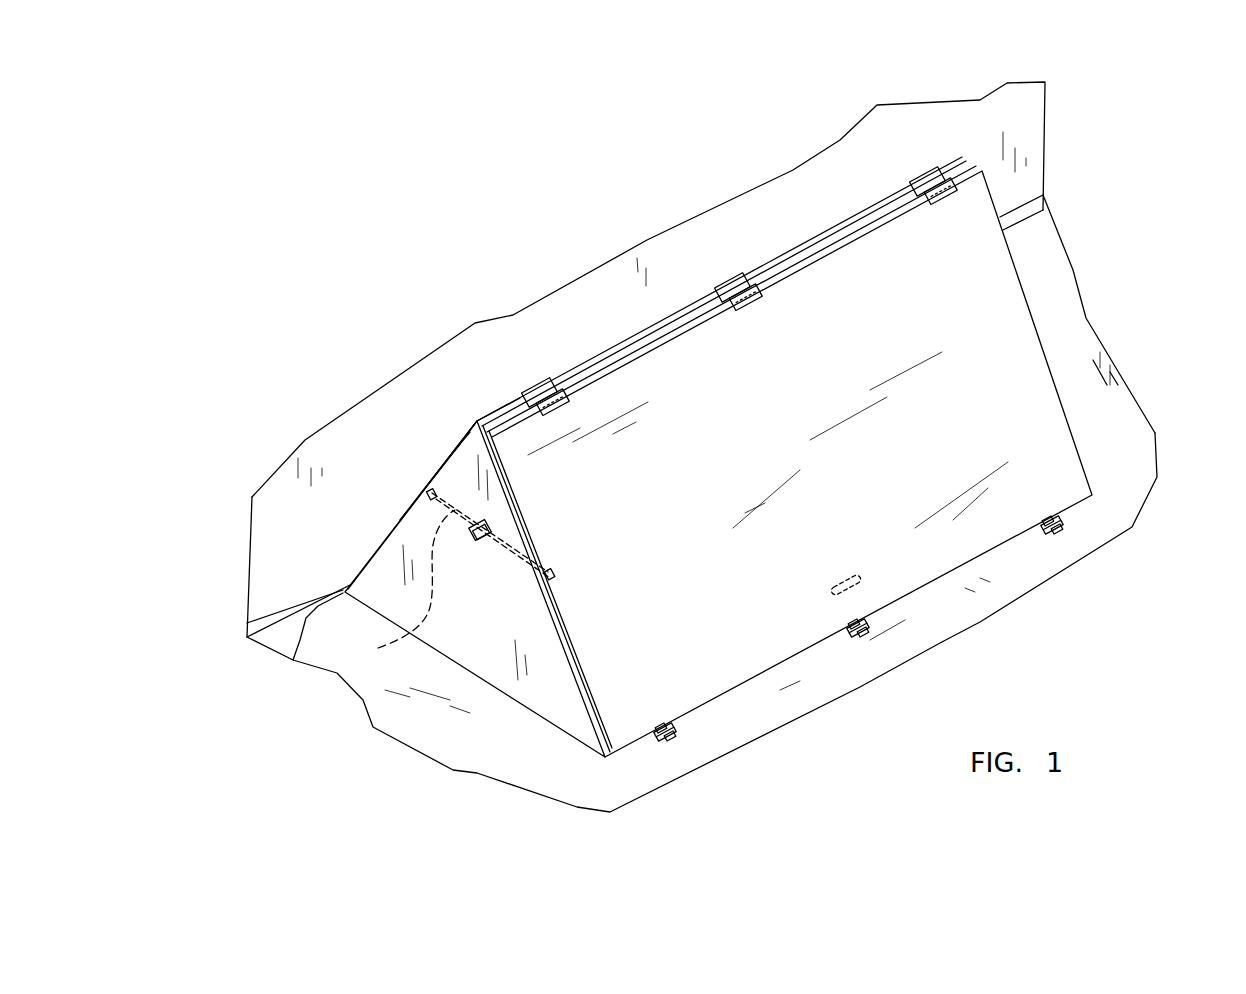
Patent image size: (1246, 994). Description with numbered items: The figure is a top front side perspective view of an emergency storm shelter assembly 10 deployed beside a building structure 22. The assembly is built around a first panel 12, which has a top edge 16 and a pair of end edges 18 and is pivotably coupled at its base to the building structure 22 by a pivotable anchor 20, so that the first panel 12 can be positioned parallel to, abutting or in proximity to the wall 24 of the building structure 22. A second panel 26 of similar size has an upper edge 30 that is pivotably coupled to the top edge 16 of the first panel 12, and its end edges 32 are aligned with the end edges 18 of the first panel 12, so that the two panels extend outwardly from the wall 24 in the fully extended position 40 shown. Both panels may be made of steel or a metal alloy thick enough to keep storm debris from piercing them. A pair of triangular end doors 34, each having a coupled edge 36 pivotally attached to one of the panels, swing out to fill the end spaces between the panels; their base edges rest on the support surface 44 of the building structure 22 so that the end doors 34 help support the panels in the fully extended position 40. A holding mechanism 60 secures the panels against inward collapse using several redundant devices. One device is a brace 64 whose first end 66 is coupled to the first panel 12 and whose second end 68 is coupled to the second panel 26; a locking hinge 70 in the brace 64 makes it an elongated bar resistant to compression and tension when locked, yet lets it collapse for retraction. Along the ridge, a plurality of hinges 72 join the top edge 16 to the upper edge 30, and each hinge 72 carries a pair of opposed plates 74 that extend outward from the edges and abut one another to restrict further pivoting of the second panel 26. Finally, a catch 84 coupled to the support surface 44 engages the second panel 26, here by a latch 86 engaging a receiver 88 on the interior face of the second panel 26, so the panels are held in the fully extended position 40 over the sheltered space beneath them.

The emergency storm shelter assembly 10 is at (1140, 146).
The first panel 12 is at (430, 483).
The top edge 16 is at (618, 345).
The end edges 18 is at (460, 457).
The pivotable anchor 20 is at (293, 660).
The building structure 22 is at (266, 566).
The wall 24 is at (982, 116).
The second panel 26 is at (1023, 360).
The upper edge 30 is at (503, 420).
The end edges 32 is at (562, 636).
The end doors 34 is at (533, 677).
The coupled edge 36 is at (445, 443).
The fully extended position 40 is at (1050, 275).
The support surface 44 is at (985, 592).
The holding mechanism 60 is at (503, 508).
The brace 64 is at (410, 632).
The first end 66 is at (430, 493).
The second end 68 is at (555, 573).
The locking hinge 70 is at (478, 548).
The hinges 72 is at (885, 165).
The opposed plates 74 is at (920, 178).
The catch 84 is at (1088, 520).
The latch 86 is at (1047, 512).
The receiver 88 is at (1045, 540).